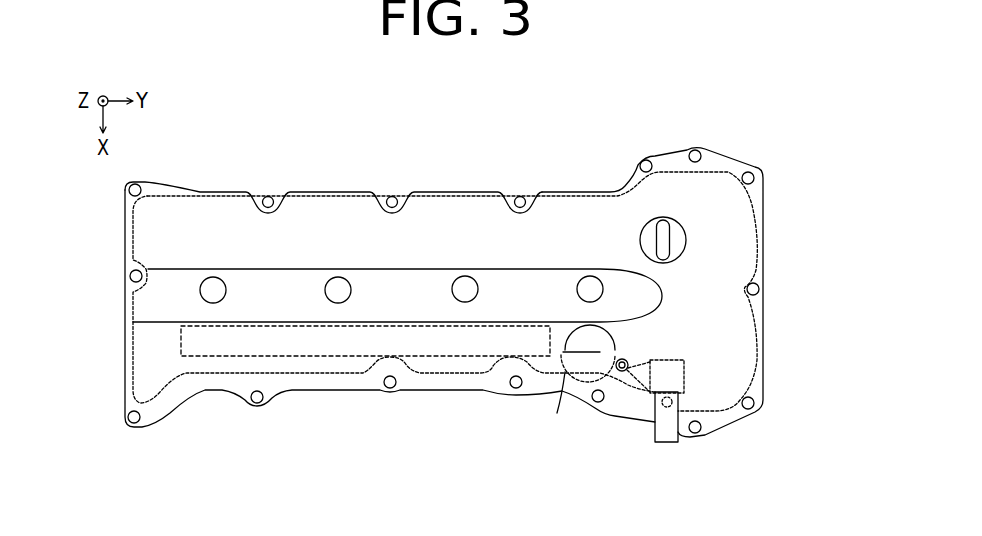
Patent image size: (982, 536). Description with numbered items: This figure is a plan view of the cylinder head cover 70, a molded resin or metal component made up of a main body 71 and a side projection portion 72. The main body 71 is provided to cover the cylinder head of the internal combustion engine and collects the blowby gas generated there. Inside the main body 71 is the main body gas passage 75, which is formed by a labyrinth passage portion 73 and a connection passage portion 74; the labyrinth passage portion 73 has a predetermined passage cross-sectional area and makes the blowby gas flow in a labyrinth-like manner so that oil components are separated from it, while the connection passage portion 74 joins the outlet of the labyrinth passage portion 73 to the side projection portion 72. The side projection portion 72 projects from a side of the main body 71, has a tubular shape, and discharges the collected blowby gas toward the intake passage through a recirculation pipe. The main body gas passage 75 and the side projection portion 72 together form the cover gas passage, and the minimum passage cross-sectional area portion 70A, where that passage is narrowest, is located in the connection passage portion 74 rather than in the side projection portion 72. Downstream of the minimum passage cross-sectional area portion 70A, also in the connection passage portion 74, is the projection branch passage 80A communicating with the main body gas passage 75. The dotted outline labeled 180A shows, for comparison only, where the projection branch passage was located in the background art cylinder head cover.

The cylinder head cover 70 is at (232, 160).
The main body 71 is at (305, 220).
The side projection portion 72 is at (663, 443).
The labyrinth passage portion 73 is at (527, 326).
The connection passage portion 74 is at (623, 358).
The main body gas passage 75 is at (415, 250).
The minimum passage cross-sectional area portion 70A is at (557, 413).
The projection branch passage 80A is at (600, 367).
The position of the projection branch passage in the background art cylinder head co 180A is at (684, 400).